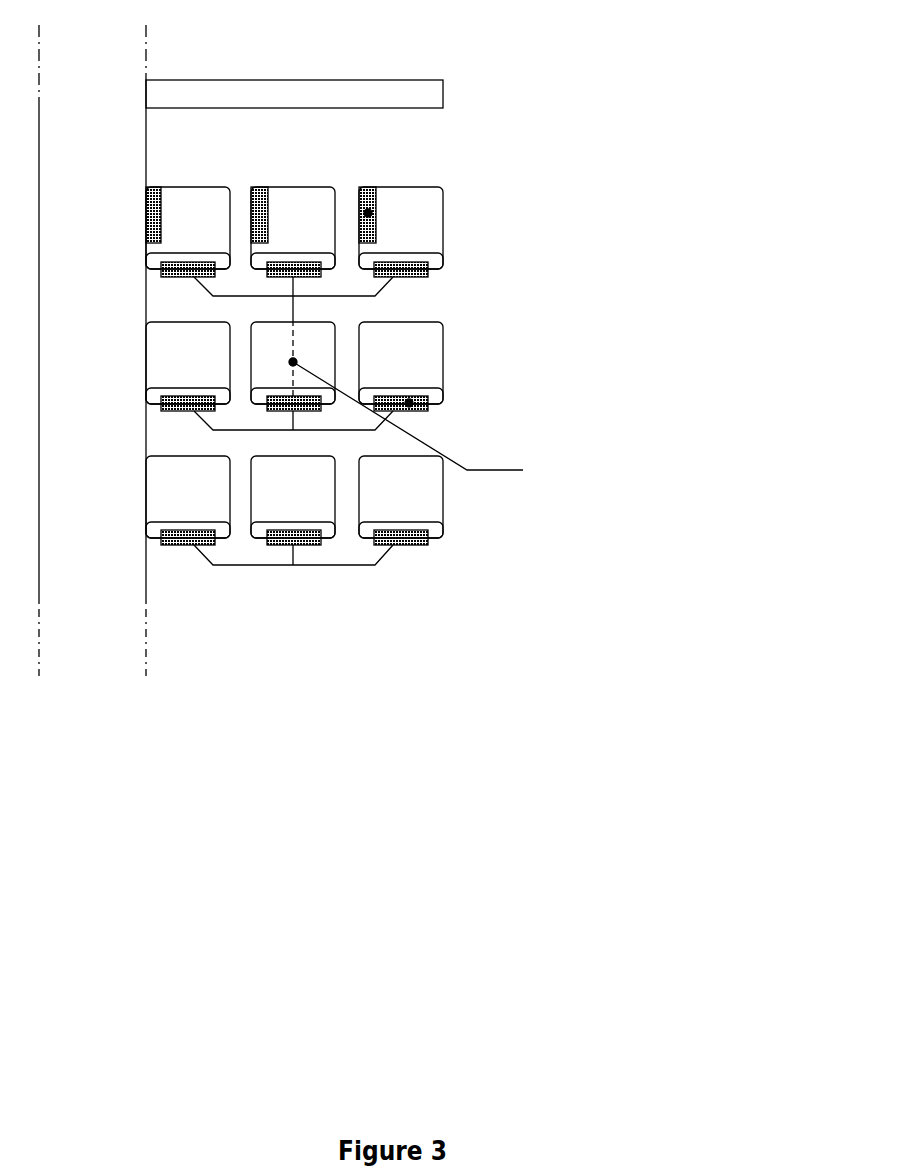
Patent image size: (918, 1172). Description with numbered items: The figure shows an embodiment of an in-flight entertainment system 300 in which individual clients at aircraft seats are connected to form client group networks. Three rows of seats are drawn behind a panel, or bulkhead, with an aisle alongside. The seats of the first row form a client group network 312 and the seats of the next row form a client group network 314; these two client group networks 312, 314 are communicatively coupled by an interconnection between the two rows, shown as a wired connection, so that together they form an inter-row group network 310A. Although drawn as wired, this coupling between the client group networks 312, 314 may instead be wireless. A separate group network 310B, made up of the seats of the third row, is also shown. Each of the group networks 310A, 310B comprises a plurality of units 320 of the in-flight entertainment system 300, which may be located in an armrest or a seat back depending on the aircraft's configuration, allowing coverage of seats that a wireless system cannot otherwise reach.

The in-flight entertainment system 300 is at (423, 341).
The inter-row group network 310A is at (380, 302).
The separate group network 310B is at (702, 442).
The client group network 312 is at (127, 293).
The client group network 314 is at (127, 318).
The unit 320 is at (432, 264).